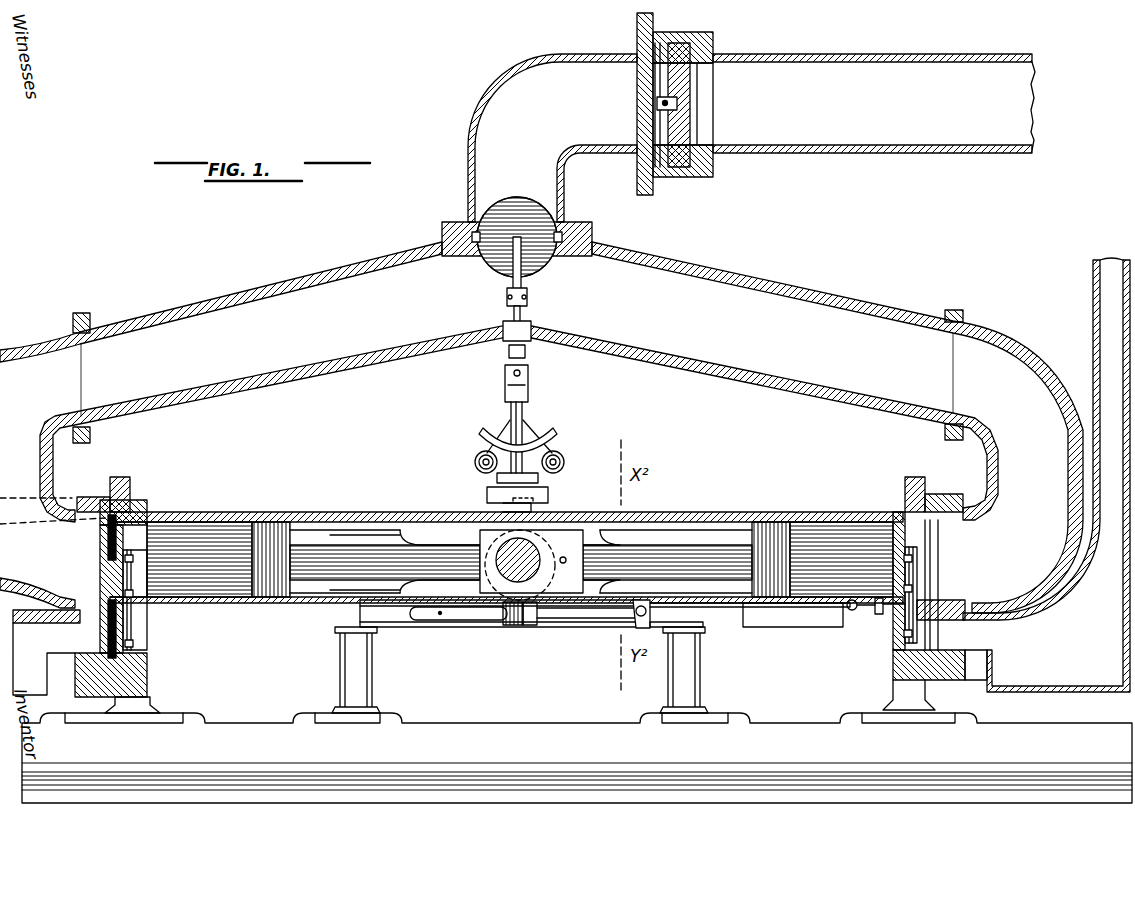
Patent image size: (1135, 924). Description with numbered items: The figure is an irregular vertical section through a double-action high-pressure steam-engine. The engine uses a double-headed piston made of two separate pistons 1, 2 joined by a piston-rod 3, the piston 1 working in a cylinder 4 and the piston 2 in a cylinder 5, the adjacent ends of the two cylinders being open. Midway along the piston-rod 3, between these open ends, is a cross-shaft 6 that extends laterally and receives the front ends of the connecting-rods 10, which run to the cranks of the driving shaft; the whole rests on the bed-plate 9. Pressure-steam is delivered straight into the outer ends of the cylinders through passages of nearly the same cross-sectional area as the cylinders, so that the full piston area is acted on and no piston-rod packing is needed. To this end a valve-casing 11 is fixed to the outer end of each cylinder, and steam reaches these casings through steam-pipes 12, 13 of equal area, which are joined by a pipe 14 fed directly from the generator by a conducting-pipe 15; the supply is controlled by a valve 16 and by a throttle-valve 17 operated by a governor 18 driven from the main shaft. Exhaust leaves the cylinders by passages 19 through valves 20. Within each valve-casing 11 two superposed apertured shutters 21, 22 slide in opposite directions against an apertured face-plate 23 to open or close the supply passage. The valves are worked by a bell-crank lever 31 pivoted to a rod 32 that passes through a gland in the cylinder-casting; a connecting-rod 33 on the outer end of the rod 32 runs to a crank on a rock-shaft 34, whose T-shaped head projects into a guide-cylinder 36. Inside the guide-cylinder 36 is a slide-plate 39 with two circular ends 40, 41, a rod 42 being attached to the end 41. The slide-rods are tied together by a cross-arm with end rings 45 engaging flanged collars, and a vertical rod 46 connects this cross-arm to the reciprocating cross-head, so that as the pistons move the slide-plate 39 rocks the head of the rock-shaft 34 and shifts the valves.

The piston 1 is at (275, 520).
The piston 2 is at (775, 530).
The piston-rod 3 is at (352, 545).
The cylinder 4 is at (204, 520).
The cylinder 5 is at (848, 528).
The cross-shaft 6 is at (560, 522).
The bed-plate 9 is at (577, 758).
The connecting-rods 10 is at (80, 508).
The valve-casing 11 is at (112, 500).
The steam-pipe 12 is at (1046, 475).
The steam-pipe 13 is at (52, 568).
The pipe 14 is at (541, 427).
The conducting-pipe 15 is at (874, 103).
The valve 16 is at (656, 101).
The throttle-valve 17 is at (517, 212).
The governor 18 is at (520, 428).
The exhaust passages 19 is at (140, 622).
The exhaust valves 20 is at (108, 632).
The shutter 21 is at (931, 558).
The shutter 22 is at (939, 581).
The face-plate 23 is at (926, 533).
The bell-crank lever 31 is at (878, 616).
The valve-rod 32 is at (852, 612).
The connecting-rod 33 is at (776, 610).
The rock-shaft 34 is at (632, 620).
The guide-cylinder 36 is at (440, 620).
The slide-plate 39 is at (700, 628).
The circular end 40 is at (748, 620).
The circular end 41 is at (531, 626).
The slide-rod 42 is at (475, 620).
The end rings 45 is at (512, 626).
The vertical rod 46 is at (495, 582).